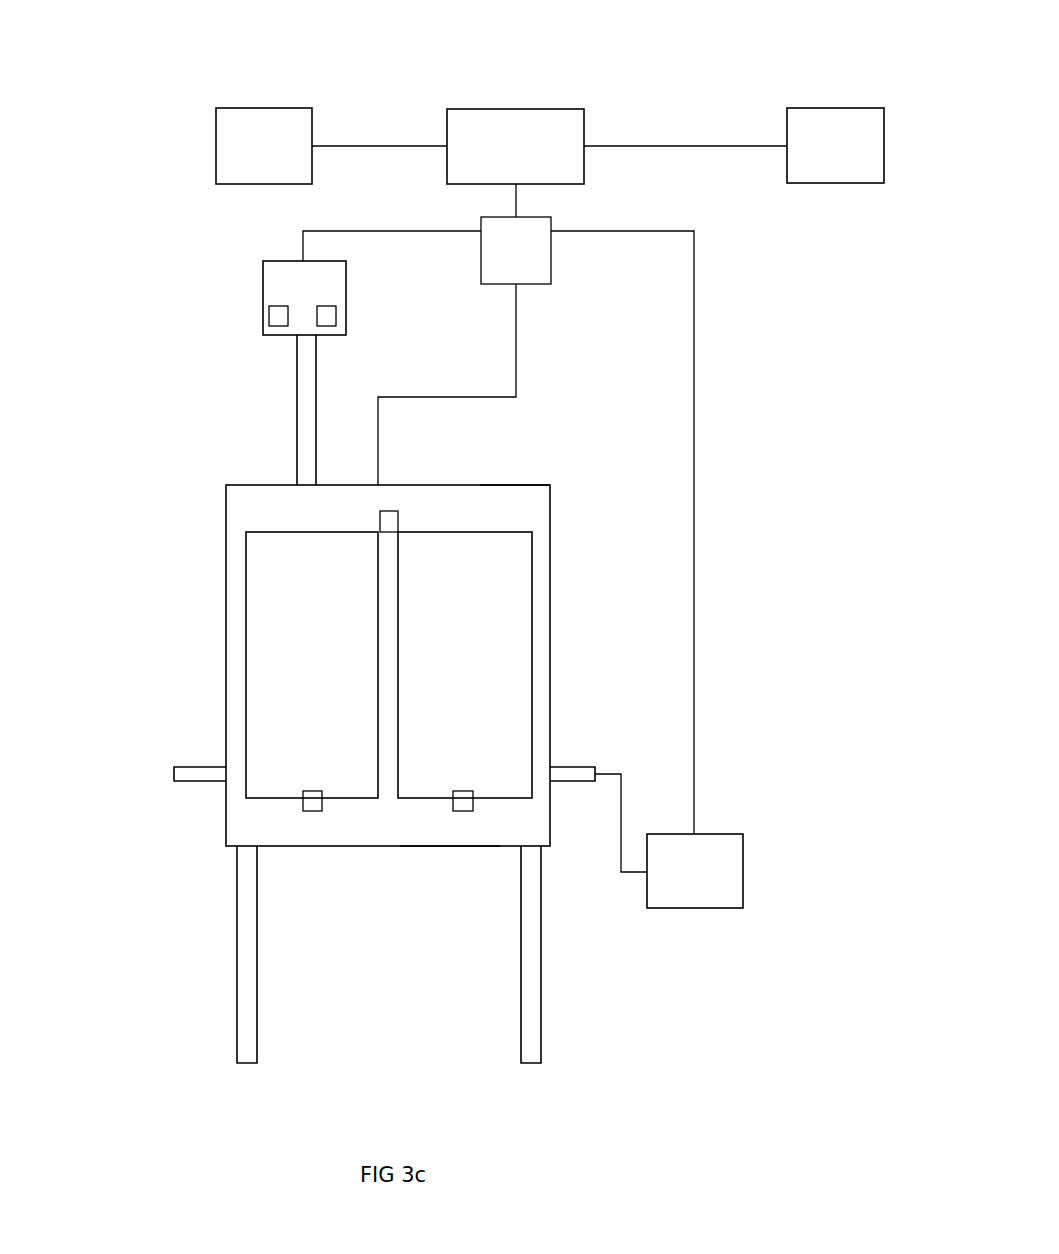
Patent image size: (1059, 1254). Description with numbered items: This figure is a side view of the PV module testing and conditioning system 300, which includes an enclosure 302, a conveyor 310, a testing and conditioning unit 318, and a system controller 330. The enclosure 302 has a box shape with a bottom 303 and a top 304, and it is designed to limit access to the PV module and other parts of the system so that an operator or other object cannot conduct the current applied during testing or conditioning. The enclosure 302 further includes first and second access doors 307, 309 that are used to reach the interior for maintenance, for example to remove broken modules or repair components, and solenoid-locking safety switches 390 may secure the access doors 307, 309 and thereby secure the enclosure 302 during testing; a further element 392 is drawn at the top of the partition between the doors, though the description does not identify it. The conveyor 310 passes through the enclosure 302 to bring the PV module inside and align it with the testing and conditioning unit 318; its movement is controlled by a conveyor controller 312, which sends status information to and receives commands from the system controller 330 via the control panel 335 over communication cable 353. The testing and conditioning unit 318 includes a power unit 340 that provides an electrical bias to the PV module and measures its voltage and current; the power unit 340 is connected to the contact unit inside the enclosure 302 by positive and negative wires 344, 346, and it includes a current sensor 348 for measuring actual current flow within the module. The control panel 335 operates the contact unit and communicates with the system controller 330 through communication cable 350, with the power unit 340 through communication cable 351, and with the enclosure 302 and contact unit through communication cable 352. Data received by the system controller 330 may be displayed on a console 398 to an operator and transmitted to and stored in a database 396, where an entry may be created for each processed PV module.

The testing and conditioning system 300 is at (776, 68).
The testing and conditioning unit 318 is at (120, 363).
The enclosure 302 is at (505, 483).
The bottom 303 is at (443, 846).
The top 304 is at (530, 483).
The first access door 307 is at (246, 604).
The second access door 309 is at (532, 585).
The conveyor 310 is at (187, 781).
The conveyor controller 312 is at (745, 870).
The system controller 330 is at (516, 109).
The control panel 335 is at (535, 285).
The power unit 340 is at (263, 298).
The positive wire 344 is at (297, 357).
The negative wire 346 is at (316, 383).
The current sensor 348 is at (336, 316).
The communication cable 350 is at (516, 199).
The communication cable 351 is at (424, 230).
The communication cable 352 is at (477, 396).
The communication cable 353 is at (695, 421).
The solenoid-locking safety switches 390 is at (460, 811).
The sensor 392 is at (390, 510).
The database 396 is at (216, 148).
The console 398 is at (835, 183).